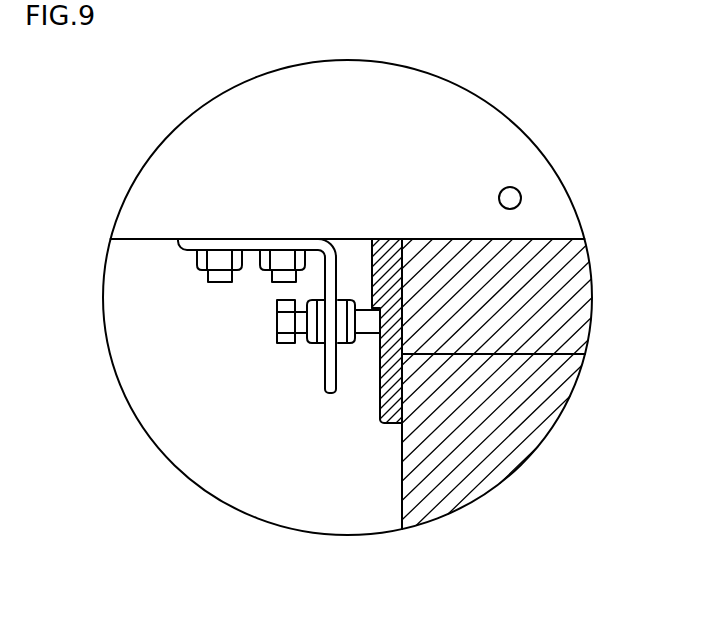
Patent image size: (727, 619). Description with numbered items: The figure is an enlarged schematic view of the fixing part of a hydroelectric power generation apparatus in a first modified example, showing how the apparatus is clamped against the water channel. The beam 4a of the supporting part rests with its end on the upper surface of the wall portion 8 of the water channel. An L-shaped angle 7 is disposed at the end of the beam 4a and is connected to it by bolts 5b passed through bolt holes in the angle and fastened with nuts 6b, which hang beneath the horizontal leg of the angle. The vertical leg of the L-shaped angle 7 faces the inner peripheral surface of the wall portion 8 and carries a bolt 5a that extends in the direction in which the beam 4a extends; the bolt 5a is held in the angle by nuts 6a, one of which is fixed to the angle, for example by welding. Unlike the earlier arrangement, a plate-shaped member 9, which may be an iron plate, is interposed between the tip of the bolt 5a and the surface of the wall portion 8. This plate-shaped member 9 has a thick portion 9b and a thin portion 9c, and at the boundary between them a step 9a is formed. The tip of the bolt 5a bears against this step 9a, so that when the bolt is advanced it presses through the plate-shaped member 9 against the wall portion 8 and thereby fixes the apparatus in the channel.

The beam 4a is at (203, 130).
The L-shaped angle 7 is at (242, 245).
The nut 6b is at (284, 258).
The bolt 5b is at (218, 273).
The bolt 5a is at (286, 345).
The nut 6a is at (318, 345).
The plate-shaped member 9 is at (521, 331).
The step 9a is at (379, 294).
The thick portion 9b is at (388, 292).
The thin portion 9c is at (405, 352).
The wall portion 8 is at (533, 412).